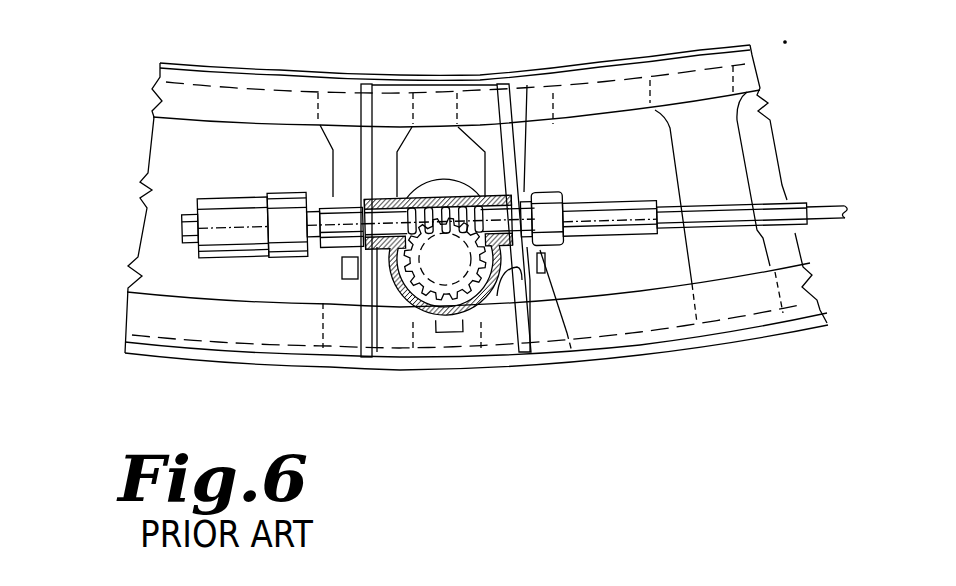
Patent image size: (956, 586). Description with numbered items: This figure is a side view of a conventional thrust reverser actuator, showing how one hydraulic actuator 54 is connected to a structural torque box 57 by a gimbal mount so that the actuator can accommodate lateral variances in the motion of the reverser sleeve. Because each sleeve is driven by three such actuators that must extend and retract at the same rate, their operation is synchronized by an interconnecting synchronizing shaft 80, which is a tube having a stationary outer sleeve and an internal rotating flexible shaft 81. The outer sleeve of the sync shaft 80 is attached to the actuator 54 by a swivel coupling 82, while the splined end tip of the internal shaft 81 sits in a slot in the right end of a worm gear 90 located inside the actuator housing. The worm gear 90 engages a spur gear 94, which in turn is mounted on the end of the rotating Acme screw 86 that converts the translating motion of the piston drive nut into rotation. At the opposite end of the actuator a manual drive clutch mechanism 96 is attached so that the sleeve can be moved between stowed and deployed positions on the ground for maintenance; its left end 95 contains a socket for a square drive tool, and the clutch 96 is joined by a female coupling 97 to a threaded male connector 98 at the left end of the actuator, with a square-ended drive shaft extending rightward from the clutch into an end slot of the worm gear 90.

The hydraulic actuator 54 is at (497, 305).
The structural torque box 57 is at (150, 60).
The synchronizing shaft 80 is at (768, 206).
The internal rotating flexible shaft 81 is at (832, 208).
The swivel coupling 82 is at (547, 195).
The Acme screw 86 is at (443, 272).
The worm gear 90 is at (437, 205).
The spur gear 94 is at (475, 295).
The left end 95 is at (183, 234).
The manual drive clutch mechanism 96 is at (232, 207).
The female coupling 97 is at (323, 200).
The threaded male connector 98 is at (362, 203).